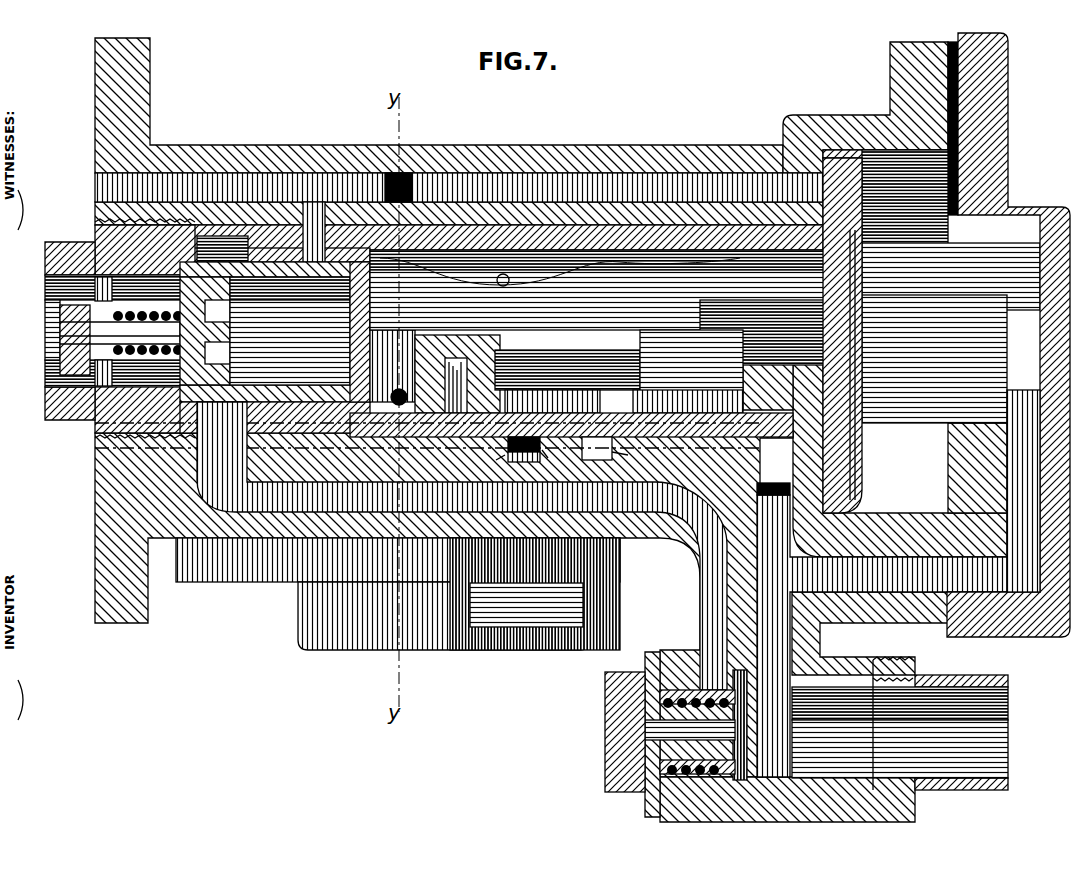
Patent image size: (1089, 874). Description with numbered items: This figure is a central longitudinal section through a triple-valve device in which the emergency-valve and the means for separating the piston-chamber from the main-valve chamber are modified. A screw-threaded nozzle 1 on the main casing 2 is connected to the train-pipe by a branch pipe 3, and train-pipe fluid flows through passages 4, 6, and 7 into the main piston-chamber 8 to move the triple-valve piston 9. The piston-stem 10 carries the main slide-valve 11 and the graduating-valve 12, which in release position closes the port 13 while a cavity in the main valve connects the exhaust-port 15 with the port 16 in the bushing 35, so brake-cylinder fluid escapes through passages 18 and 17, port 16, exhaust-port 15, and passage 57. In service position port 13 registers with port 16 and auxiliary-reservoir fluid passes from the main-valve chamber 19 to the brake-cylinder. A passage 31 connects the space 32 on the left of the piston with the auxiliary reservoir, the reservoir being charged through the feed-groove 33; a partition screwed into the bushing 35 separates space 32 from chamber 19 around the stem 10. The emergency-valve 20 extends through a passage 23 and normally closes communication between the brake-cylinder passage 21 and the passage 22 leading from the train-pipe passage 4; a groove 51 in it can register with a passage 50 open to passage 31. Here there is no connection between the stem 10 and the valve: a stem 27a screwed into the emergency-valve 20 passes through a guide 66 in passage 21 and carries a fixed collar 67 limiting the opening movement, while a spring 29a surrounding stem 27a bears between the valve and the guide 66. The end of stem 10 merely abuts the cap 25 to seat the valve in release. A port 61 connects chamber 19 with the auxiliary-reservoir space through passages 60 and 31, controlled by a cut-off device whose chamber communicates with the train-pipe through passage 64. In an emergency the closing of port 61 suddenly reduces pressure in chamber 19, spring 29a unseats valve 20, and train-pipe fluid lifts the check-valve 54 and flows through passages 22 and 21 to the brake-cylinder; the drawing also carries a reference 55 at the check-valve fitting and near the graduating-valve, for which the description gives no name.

The screw-threaded nozzle 1 is at (912, 670).
The main casing 2 is at (645, 150).
The branch pipe 3 is at (982, 680).
The train-pipe passage 4 is at (900, 725).
The passage 6 is at (882, 636).
The passage 7 is at (1008, 335).
The main piston-chamber 8 is at (951, 291).
The triple-valve piston 9 is at (862, 462).
The piston-stem 10 is at (635, 311).
The main slide-valve 11 is at (457, 374).
The graduating-valve 12 is at (567, 368).
The port 13 is at (459, 385).
The exhaust-port 15 is at (597, 437).
The port 16 is at (524, 438).
The passage 17 is at (486, 463).
The passage 18 is at (558, 462).
The main-valve chamber 19 is at (688, 371).
The emergency-valve 20 is at (205, 378).
The brake-cylinder passage 21 is at (170, 353).
The passage 22 is at (462, 546).
The passage 23 is at (427, 436).
The cap 25 is at (290, 331).
The stem 27a is at (145, 330).
The spring 29a is at (151, 348).
The passage 31 is at (459, 187).
The space 32 is at (200, 243).
The feed-groove 33 is at (835, 150).
The bushing 35 is at (571, 425).
The passage 50 is at (318, 242).
The groove 51 is at (243, 247).
The check-valve 54 is at (740, 698).
The nut 55 is at (552, 377).
The passage 57 is at (633, 456).
The passage 60 is at (412, 190).
The port 61 is at (382, 333).
The passage 64 is at (773, 512).
The guide 66 is at (86, 331).
The cap or fixed collar 67 is at (46, 340).